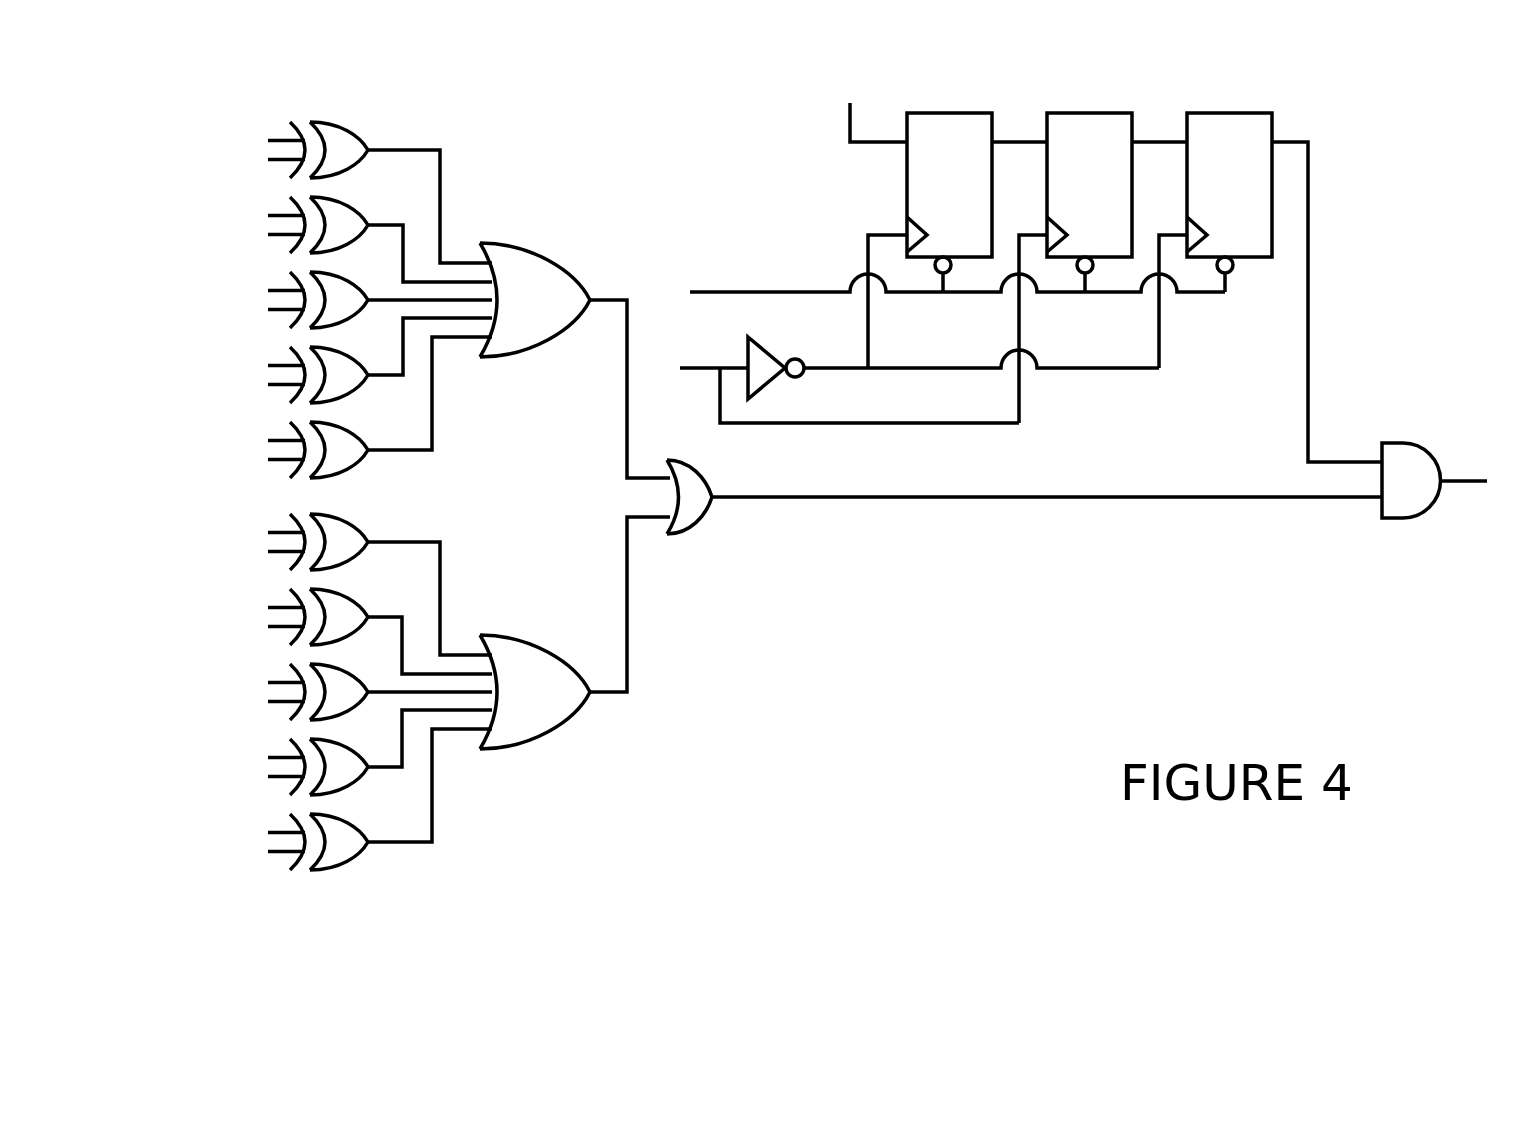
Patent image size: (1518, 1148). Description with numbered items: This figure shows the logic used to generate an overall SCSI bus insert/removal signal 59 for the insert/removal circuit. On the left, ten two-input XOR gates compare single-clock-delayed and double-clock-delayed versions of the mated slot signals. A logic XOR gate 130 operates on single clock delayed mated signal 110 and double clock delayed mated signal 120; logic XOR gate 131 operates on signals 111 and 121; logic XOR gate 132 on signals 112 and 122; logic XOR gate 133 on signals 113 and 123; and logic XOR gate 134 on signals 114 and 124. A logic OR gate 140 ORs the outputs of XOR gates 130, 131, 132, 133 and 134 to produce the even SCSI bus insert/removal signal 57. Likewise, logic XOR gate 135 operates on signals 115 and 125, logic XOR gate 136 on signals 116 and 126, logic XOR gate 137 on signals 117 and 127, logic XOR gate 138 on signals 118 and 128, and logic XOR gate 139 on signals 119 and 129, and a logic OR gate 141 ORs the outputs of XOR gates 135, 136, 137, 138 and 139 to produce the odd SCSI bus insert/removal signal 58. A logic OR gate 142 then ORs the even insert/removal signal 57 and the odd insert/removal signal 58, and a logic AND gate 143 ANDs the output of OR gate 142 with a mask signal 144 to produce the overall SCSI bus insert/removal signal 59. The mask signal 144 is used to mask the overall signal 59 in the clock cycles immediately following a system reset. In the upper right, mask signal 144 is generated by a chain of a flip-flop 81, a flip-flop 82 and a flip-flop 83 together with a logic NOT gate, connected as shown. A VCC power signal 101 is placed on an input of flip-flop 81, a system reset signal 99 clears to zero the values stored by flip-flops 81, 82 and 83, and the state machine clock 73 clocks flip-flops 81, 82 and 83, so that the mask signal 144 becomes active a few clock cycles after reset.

The single clock delayed mated 2 slot 0 signal 110 is at (266, 142).
The single clock delayed mated 2 slot 0 signal 111 is at (266, 217).
The single clock delayed mated 2 slot 0 signal 112 is at (266, 292).
The single clock delayed mated 2 slot 0 signal 113 is at (266, 367).
The single clock delayed mated 2 slot 0 signal 114 is at (266, 442).
The single clock delayed mated 2 slot 0 signal 115 is at (266, 534).
The single clock delayed mated 2 slot 0 signal 116 is at (266, 609).
The single clock delayed mated 2 slot 0 signal 117 is at (266, 684).
The single clock delayed mated 2 slot 0 signal 118 is at (266, 759).
The single clock delayed mated 2 slot 0 signal 119 is at (266, 834).
The double clock delayed mated 2 slot 0 signal 120 is at (266, 166).
The double clock delayed mated 2 slot 0 signal 121 is at (266, 241).
The double clock delayed mated 2 slot 0 signal 122 is at (266, 316).
The double clock delayed mated 2 slot 0 signal 123 is at (266, 391).
The double clock delayed mated 2 slot 0 signal 124 is at (266, 466).
The double clock delayed mated 2 slot 0 signal 125 is at (266, 558).
The double clock delayed mated 2 slot 0 signal 126 is at (266, 633).
The double clock delayed mated 2 slot 0 signal 127 is at (266, 708).
The double clock delayed mated 2 slot 0 signal 128 is at (266, 783).
The double clock delayed mated 2 slot 0 signal 129 is at (266, 858).
The logic XOR gate 130 is at (358, 132).
The logic XOR gate 131 is at (358, 207).
The logic XOR gate 132 is at (364, 273).
The logic XOR gate 133 is at (364, 348).
The logic XOR gate 134 is at (364, 441).
The logic XOR gate 135 is at (358, 524).
The logic XOR gate 136 is at (358, 599).
The logic XOR gate 137 is at (364, 665).
The logic XOR gate 138 is at (364, 740).
The logic XOR gate 139 is at (358, 823).
The logic OR gate 140 is at (541, 244).
The logic OR gate 141 is at (530, 638).
The logic OR gate 142 is at (708, 486).
The logic AND gate 143 is at (1417, 443).
The mask signal 144 is at (763, 348).
The even SCSI Bus insert/removal signal 57 is at (624, 398).
The odd SCSI Bus insert/removal signal 58 is at (624, 549).
The overall SCSI bus insert/removal signal 59 is at (1463, 486).
The state machine clock 73 is at (697, 362).
The system reset signal 99 is at (700, 279).
The VCC power signal 101 is at (845, 122).
The flip-flop 81 is at (903, 165).
The flip-flop 82 is at (1045, 165).
The flip-flop 83 is at (1187, 160).